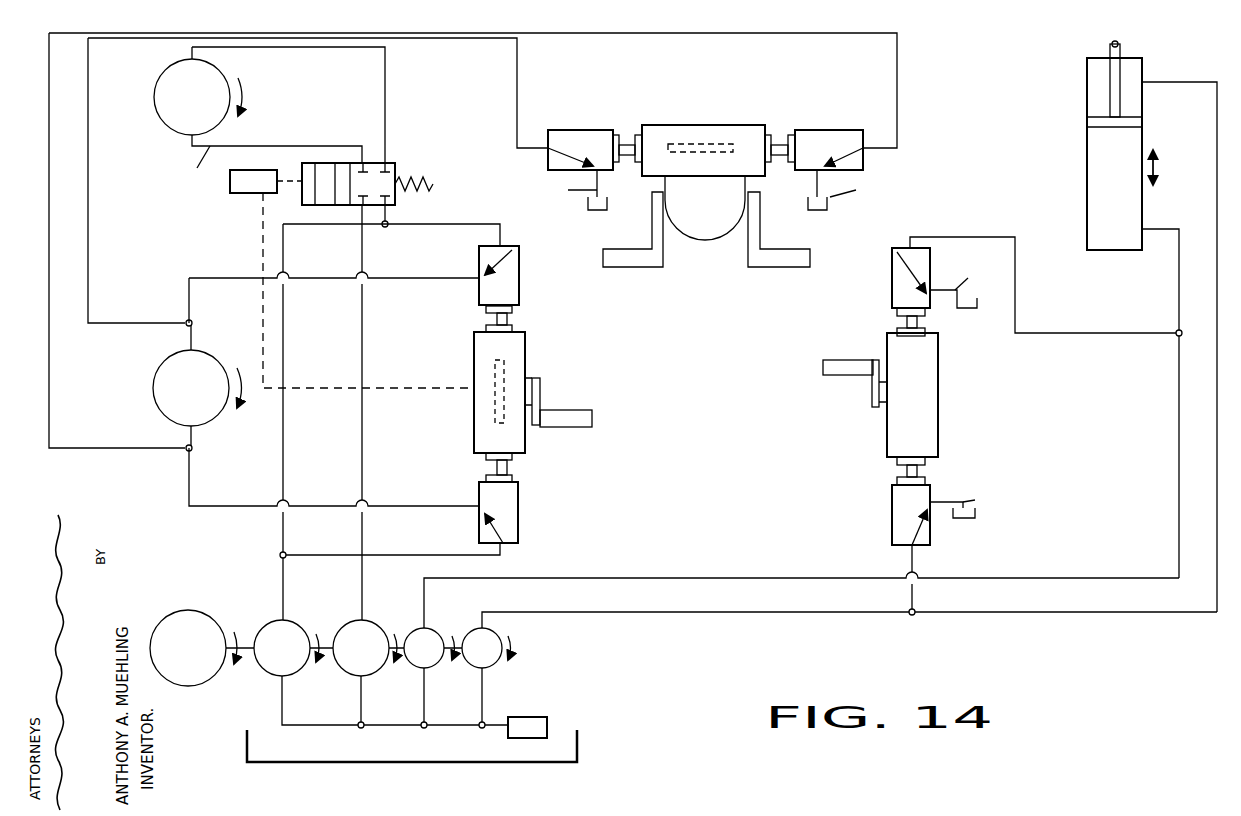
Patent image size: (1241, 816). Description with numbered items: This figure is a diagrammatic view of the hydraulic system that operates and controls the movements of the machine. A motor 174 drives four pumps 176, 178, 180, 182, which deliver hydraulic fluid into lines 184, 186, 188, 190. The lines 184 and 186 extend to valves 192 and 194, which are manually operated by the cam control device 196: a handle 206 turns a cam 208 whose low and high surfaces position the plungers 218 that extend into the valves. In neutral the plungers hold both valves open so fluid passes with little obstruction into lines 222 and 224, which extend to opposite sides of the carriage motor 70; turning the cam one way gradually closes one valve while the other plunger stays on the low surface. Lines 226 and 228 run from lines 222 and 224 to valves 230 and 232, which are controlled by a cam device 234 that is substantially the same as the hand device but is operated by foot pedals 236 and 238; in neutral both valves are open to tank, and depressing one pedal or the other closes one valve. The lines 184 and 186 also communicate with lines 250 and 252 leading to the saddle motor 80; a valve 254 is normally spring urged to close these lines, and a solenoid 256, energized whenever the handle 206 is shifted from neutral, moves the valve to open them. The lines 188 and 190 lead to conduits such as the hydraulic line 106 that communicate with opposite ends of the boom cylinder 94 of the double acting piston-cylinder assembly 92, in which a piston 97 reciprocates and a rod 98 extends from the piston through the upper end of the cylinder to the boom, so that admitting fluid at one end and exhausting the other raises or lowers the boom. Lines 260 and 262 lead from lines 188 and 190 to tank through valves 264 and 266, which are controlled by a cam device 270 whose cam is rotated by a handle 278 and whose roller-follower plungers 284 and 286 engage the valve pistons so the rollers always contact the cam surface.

The hydraulic motor 70 is at (219, 362).
The reversible hydraulic motor 80 is at (156, 107).
The double acting hydraulic piston-cylinder assembly 92 is at (1085, 80).
The cylinder 94 is at (1087, 185).
The piston 97 is at (1145, 122).
The rod 98 is at (1122, 47).
The hydraulic line 106 is at (1158, 82).
The motor 174 is at (188, 610).
The pump 176 is at (262, 672).
The pump 178 is at (343, 672).
The pump 180 is at (412, 672).
The pump 182 is at (468, 672).
The line 184 is at (285, 549).
The line 186 is at (420, 555).
The line 188 is at (545, 578).
The line 190 is at (608, 613).
The valve 192 is at (531, 262).
The valve 194 is at (519, 512).
The cam control device 196 is at (529, 346).
The handle 206 is at (541, 405).
The cam 208 is at (495, 370).
The plunger 218 is at (497, 318).
The line 222 is at (402, 288).
The line 224 is at (392, 506).
The line 226 is at (89, 228).
The line 228 is at (50, 360).
The valve 230 is at (568, 135).
The valve 232 is at (825, 135).
The cam device 234 is at (736, 123).
The foot pedal 236 is at (663, 262).
The foot pedal 238 is at (748, 262).
The line 250 is at (195, 168).
The line 252 is at (387, 103).
The valve 254 is at (389, 163).
The solenoid 256 is at (252, 195).
The line 260 is at (1090, 336).
The line 262 is at (915, 565).
The valve 264 is at (895, 270).
The valve 266 is at (893, 507).
The cam device 270 is at (942, 396).
The handle 278 is at (862, 370).
The plunger 284 is at (920, 470).
The plunger 286 is at (920, 320).